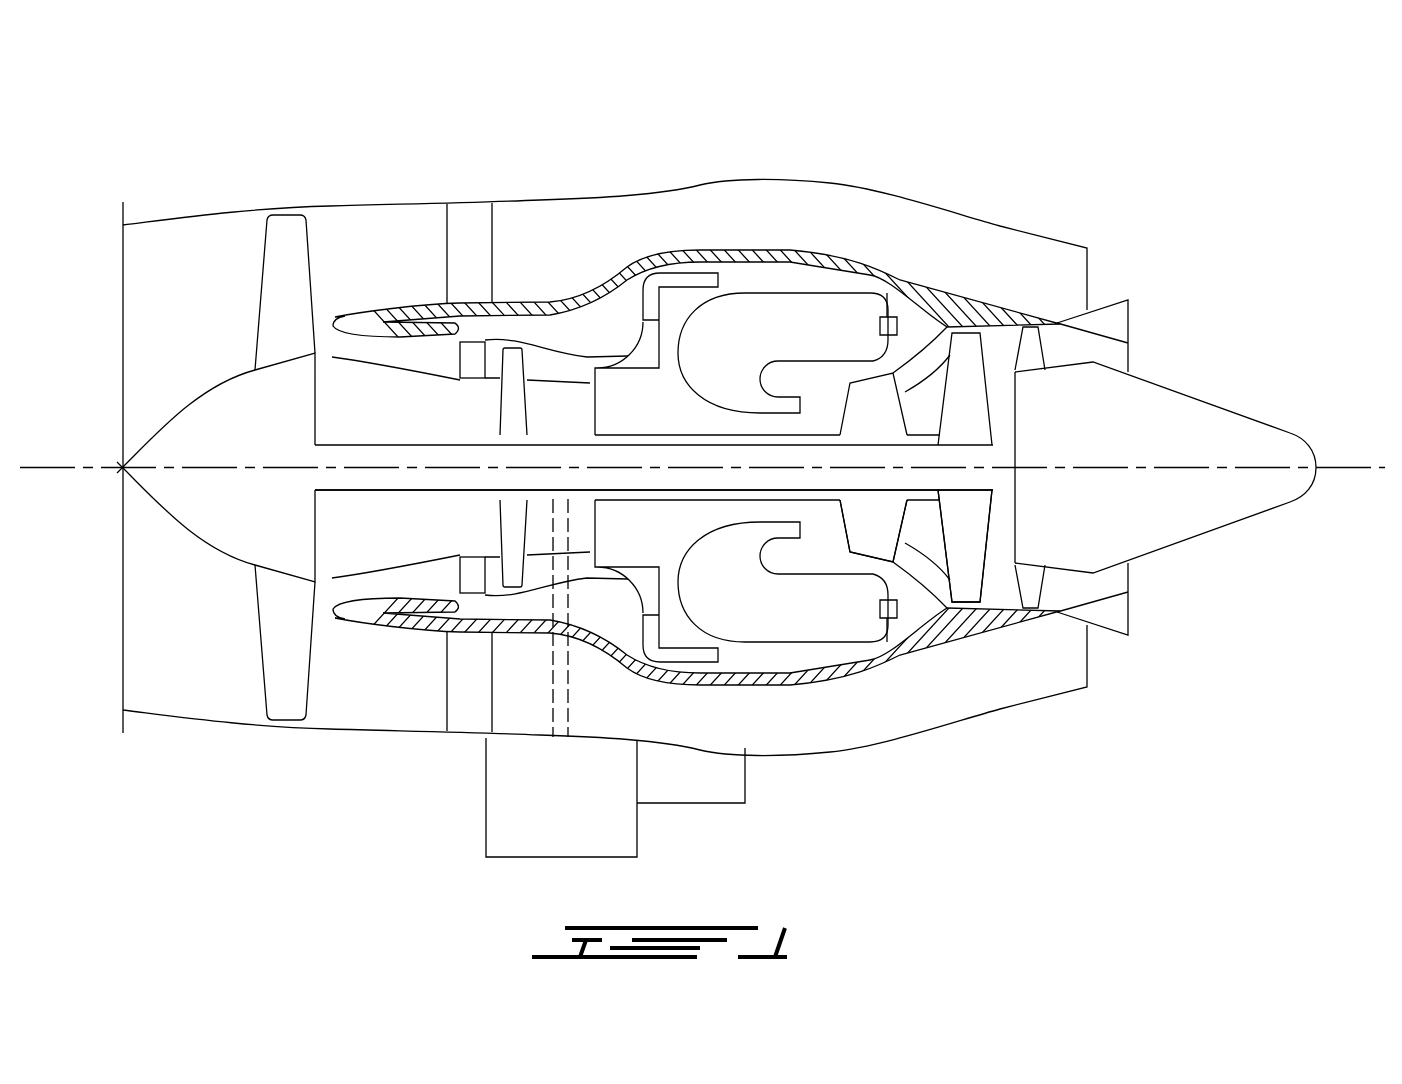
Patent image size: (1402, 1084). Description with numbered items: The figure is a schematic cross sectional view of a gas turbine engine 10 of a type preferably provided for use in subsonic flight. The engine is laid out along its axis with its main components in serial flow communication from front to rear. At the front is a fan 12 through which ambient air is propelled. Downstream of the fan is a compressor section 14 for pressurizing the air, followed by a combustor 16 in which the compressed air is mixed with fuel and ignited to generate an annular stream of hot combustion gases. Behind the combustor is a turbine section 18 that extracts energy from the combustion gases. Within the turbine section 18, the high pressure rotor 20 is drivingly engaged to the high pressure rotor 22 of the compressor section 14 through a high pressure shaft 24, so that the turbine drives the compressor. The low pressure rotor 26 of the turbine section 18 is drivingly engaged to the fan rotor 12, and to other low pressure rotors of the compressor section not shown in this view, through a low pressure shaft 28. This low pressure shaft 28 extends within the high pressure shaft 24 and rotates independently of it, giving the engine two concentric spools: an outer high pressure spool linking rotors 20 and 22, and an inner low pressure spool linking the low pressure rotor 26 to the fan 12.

The gas turbine engine 10 is at (1066, 165).
The fan 12 is at (280, 632).
The compressor section 14 is at (550, 360).
The combustor 16 is at (757, 322).
The turbine section 18 is at (922, 537).
The high pressure rotor 20 is at (880, 390).
The high pressure rotor 22 is at (637, 390).
The high pressure shaft 24 is at (797, 433).
The low pressure rotor 26 is at (968, 353).
The low pressure shaft 28 is at (402, 490).